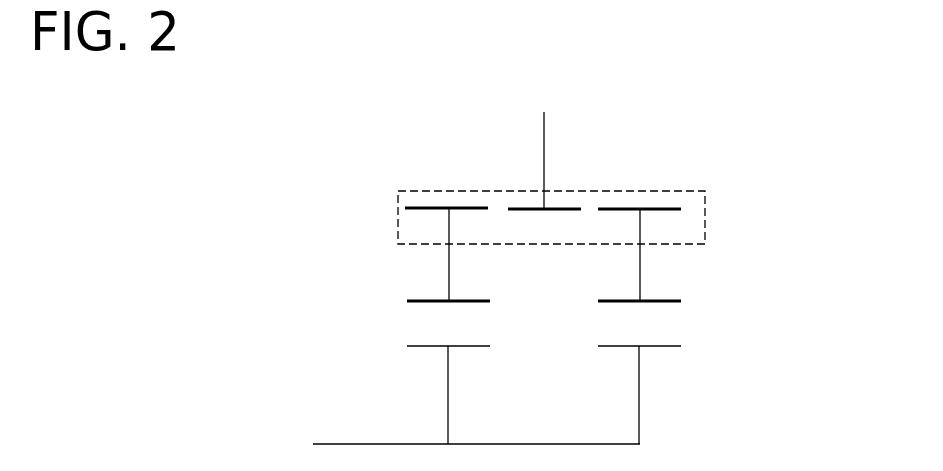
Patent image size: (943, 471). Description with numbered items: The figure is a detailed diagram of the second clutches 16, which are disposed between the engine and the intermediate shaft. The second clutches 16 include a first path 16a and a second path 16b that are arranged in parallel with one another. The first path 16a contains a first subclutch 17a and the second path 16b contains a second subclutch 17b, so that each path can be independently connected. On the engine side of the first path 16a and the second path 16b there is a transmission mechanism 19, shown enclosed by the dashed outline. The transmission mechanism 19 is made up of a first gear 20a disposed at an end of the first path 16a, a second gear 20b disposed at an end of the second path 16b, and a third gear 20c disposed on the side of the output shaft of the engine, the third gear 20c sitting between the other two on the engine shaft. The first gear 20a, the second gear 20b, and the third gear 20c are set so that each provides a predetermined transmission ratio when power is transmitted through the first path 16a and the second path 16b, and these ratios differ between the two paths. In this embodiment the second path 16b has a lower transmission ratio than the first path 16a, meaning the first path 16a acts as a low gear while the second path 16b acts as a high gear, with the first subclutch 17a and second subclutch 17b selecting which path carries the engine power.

The second clutches 16 is at (746, 86).
The first path 16a is at (352, 227).
The second path 16b is at (738, 226).
The first subclutch 17a is at (420, 300).
The second subclutch 17b is at (662, 300).
The transmission mechanism 19 is at (640, 191).
The first gear 20a is at (462, 207).
The second gear 20b is at (657, 207).
The third gear 20c is at (567, 207).